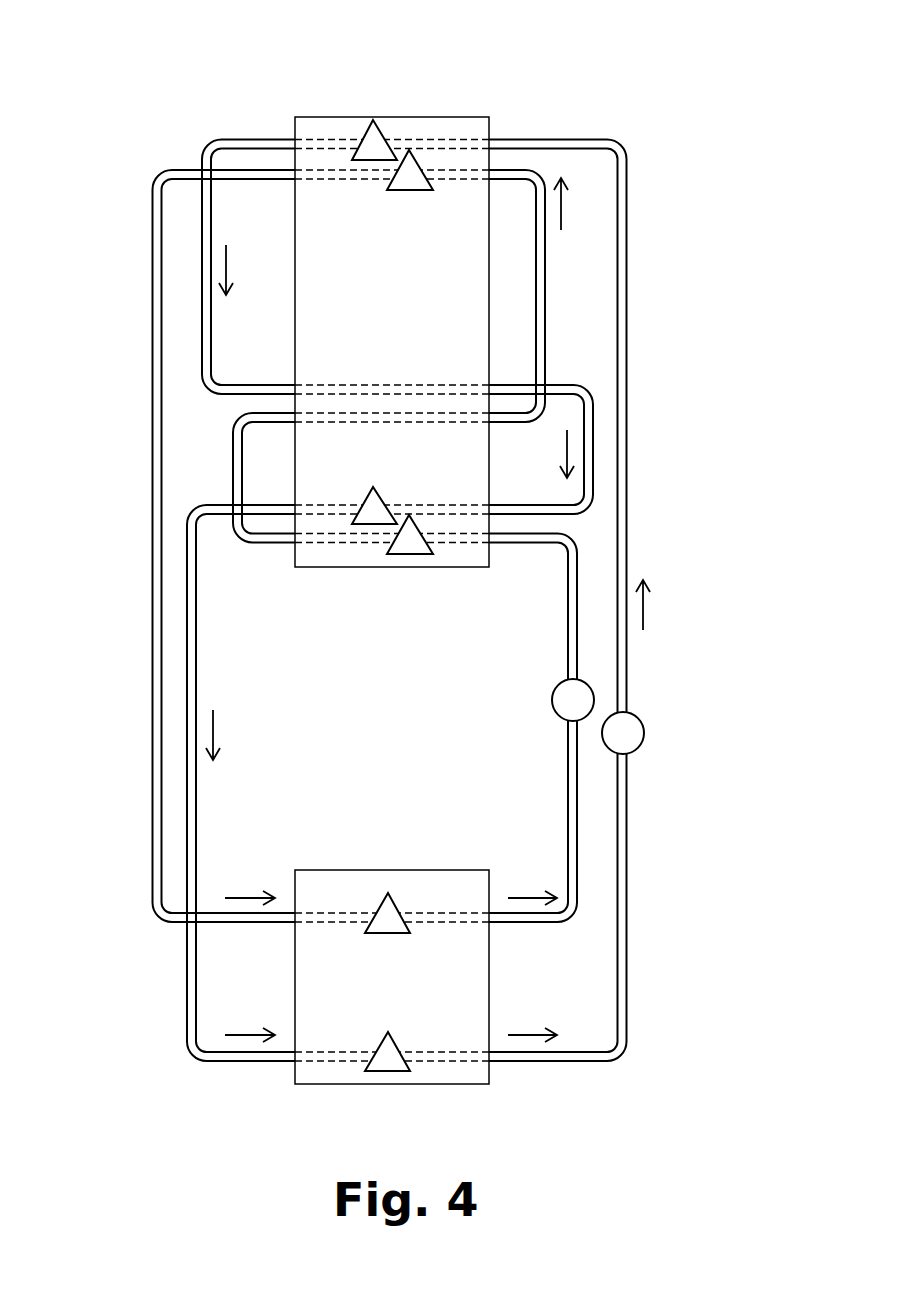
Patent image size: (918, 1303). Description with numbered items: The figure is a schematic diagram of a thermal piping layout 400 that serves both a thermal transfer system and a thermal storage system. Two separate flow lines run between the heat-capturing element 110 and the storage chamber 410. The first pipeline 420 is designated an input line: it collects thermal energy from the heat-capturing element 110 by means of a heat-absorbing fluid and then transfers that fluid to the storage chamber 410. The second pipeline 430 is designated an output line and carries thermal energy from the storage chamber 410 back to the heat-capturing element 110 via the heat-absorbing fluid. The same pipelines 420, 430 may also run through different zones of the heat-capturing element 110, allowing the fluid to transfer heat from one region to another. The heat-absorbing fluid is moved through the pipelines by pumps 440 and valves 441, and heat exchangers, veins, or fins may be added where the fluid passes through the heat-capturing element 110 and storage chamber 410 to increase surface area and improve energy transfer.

The thermal piping layout 400 is at (161, 85).
The heat-capturing element 110 is at (336, 333).
The storage chamber 410 is at (337, 1020).
The first pipeline 420 is at (515, 134).
The second pipeline 430 is at (536, 169).
The pumps 440 is at (601, 682).
The valves 441 is at (419, 165).